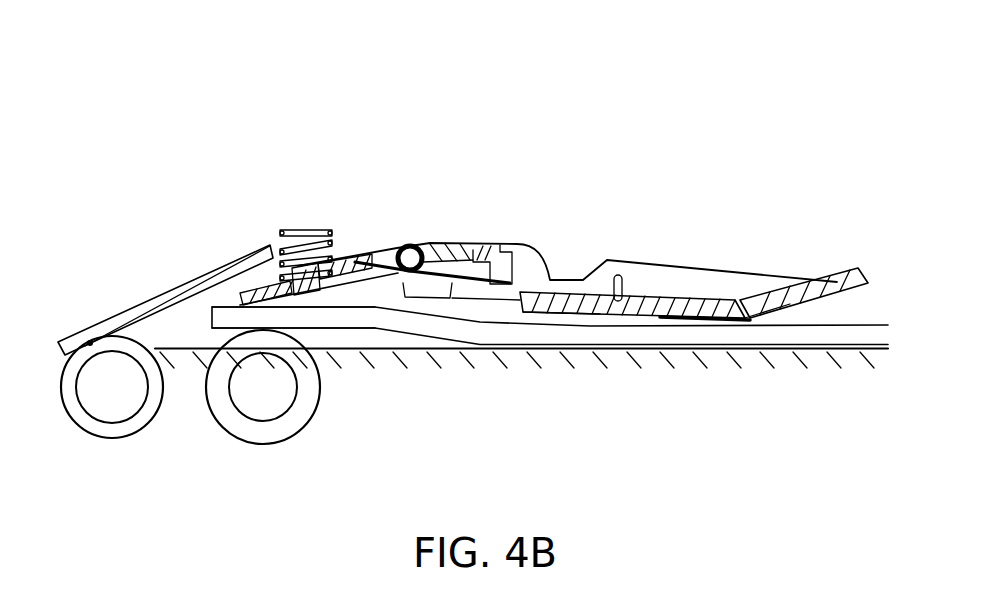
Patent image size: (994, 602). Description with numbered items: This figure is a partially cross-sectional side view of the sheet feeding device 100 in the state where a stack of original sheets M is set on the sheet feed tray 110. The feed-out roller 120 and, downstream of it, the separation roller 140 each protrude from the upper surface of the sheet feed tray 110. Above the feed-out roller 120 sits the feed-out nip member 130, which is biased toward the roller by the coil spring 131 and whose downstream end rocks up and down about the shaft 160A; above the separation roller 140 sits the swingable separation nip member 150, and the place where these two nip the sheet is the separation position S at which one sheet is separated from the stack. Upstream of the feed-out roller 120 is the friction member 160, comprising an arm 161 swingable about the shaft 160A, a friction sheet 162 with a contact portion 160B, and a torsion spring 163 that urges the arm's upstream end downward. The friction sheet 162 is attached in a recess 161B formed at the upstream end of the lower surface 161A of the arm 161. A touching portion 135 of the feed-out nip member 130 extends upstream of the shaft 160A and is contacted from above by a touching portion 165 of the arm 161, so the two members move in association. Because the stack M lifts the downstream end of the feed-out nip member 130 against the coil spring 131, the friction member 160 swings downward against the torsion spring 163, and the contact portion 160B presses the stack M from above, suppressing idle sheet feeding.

The sheet feeding device 100 is at (597, 112).
The sheet feed tray 110 is at (795, 348).
The feed-out roller 120 is at (287, 430).
The feed-out nip member 130 is at (322, 297).
The coil spring 131 is at (308, 228).
The touching portion 135 is at (490, 285).
The separation roller 140 is at (133, 430).
The separation nip member 150 is at (150, 298).
The friction member 160 is at (682, 263).
The shaft 160A is at (415, 244).
The contact portion 160B is at (685, 322).
The arm 161 is at (507, 297).
The lower surface 161A is at (570, 313).
The recess 161B is at (767, 312).
The friction sheet 162 is at (717, 327).
The torsion spring 163 is at (380, 290).
The touching portion 165 is at (496, 248).
The original sheets M is at (876, 322).
The separation position S is at (87, 341).